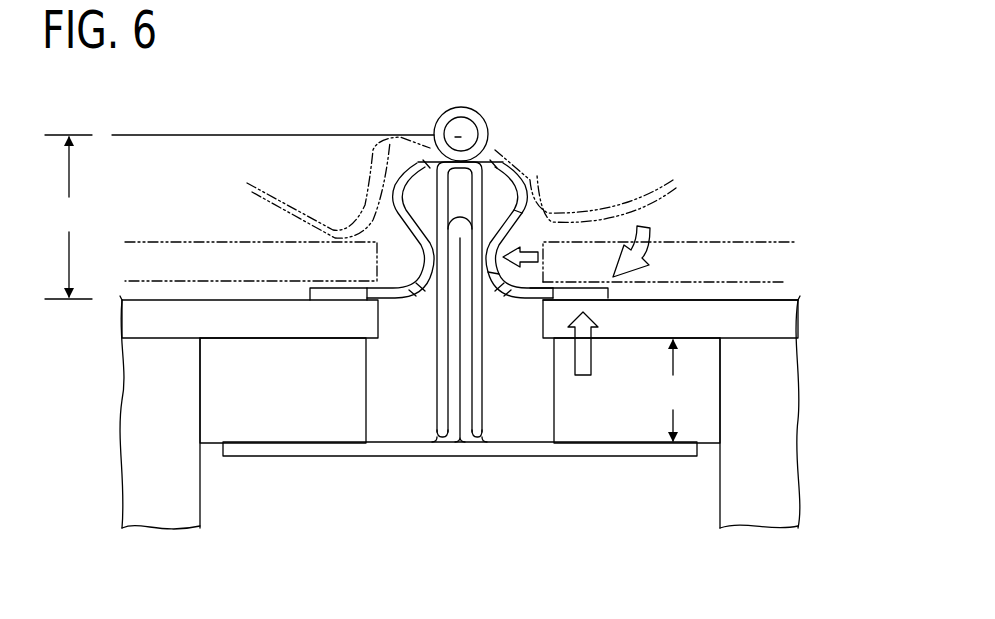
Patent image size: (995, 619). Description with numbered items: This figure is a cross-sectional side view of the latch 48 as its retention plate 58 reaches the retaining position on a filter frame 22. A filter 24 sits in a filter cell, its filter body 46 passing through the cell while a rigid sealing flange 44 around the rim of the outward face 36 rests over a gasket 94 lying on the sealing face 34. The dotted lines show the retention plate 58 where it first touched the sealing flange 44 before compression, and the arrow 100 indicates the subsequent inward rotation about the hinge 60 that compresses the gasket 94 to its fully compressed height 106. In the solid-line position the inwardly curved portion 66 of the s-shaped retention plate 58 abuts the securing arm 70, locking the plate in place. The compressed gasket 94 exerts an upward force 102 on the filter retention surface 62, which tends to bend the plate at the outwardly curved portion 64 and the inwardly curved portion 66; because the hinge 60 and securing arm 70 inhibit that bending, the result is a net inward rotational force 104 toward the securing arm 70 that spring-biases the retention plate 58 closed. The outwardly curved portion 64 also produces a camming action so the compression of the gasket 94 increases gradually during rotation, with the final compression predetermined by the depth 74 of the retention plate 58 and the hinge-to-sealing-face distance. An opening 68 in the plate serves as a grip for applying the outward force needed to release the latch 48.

The filter frame 22 is at (443, 456).
The filter 24 is at (828, 306).
The sealing face 34 is at (527, 432).
The outward face 36 is at (762, 340).
The sealing flange 44 is at (778, 298).
The filter body 46 is at (742, 452).
The latch 48 is at (322, 47).
The retention plate 58 is at (322, 293).
The hinge 60 is at (440, 116).
The filter retention surface 62 is at (625, 302).
The outwardly curved portion 64 is at (500, 172).
The inwardly curved portion 66 is at (518, 245).
The opening 68 is at (488, 285).
The securing arm 70 is at (438, 390).
The depth of the retention plate 74 is at (239, 217).
The gasket 94 is at (560, 410).
The inward rotation arrow 100 is at (640, 263).
The upward force 102 is at (593, 368).
The inward rotational force 104 is at (535, 210).
The fully compressed height 106 is at (676, 390).